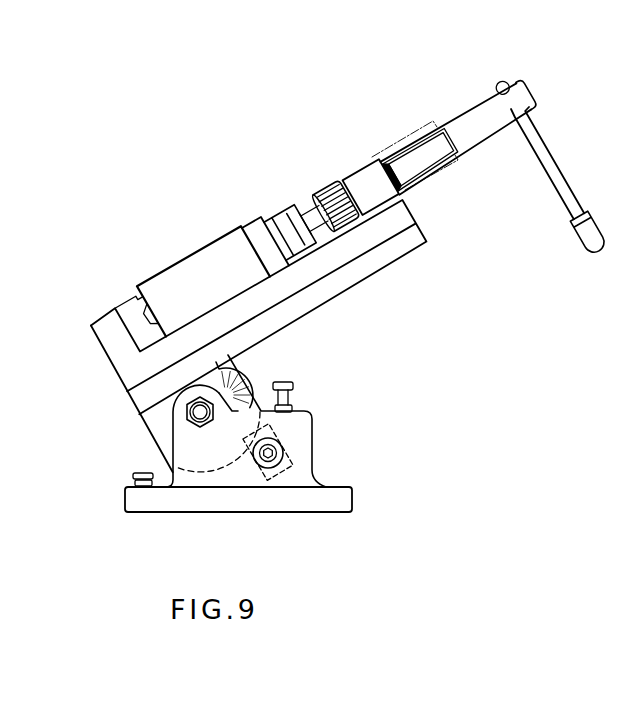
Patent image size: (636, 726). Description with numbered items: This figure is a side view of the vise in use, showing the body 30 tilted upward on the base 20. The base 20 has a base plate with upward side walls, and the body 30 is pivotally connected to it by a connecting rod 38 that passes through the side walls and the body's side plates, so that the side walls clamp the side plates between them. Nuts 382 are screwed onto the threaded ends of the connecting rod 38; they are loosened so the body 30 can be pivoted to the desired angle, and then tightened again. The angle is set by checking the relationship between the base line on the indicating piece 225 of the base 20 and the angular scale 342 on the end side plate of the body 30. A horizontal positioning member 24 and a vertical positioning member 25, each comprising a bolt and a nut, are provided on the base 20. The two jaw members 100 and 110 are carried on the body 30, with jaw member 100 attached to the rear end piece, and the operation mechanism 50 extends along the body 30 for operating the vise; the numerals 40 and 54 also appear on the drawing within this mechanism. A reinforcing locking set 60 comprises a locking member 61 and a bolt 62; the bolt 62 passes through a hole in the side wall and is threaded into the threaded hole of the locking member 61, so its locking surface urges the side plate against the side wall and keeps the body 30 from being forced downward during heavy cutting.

The base 20 is at (247, 503).
The horizontal positioning member 24 is at (292, 398).
The vertical positioning member 25 is at (133, 481).
The body 30 is at (357, 250).
The connecting rod 38 is at (188, 424).
The nut 382 is at (186, 410).
The feed screw 40 is at (288, 216).
The operation mechanism 50 is at (455, 115).
The handle 54 is at (483, 125).
The reinforcing locking set 60 is at (323, 446).
The locking member 61 is at (290, 462).
The bolt 62 is at (283, 446).
The jaw member 100 is at (124, 304).
The jaw member 110 is at (251, 221).
The indicating piece 225 is at (221, 394).
The angular scale 342 is at (243, 376).